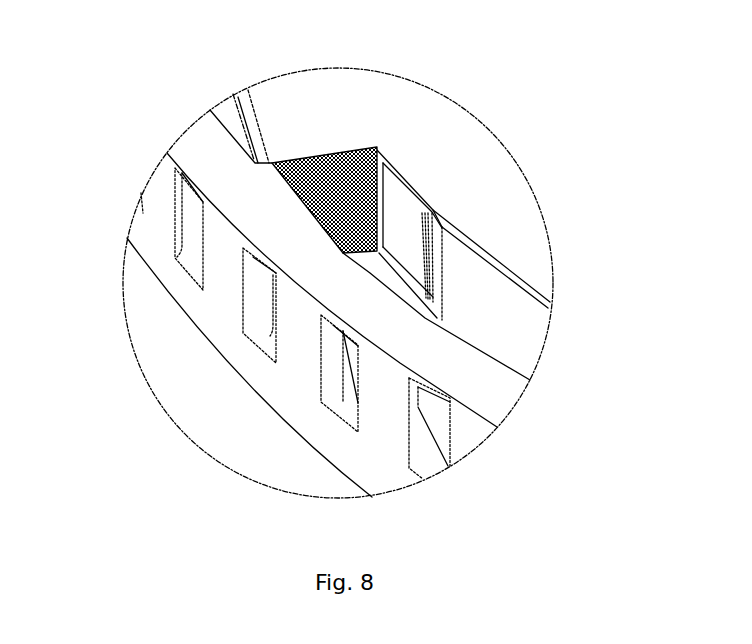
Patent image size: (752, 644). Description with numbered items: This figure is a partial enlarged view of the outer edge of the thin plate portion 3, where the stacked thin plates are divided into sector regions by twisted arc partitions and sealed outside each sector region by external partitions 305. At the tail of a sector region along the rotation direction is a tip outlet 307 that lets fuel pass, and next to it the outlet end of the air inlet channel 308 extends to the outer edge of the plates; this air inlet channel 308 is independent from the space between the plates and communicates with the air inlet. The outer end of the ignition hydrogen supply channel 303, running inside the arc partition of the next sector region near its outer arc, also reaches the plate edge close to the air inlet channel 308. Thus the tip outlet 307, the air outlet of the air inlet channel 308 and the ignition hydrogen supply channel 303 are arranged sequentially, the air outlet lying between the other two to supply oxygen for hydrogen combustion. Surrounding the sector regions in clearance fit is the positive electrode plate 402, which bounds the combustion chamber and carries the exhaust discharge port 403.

The thin plate portion 3 is at (537, 252).
The ignition hydrogen supply channel 303 is at (432, 240).
The external partition 305 is at (232, 120).
The tip outlet 307 is at (332, 177).
The air inlet channel 308 is at (408, 210).
The positive electrode plate 402 is at (148, 237).
The exhaust discharge port 403 is at (190, 258).